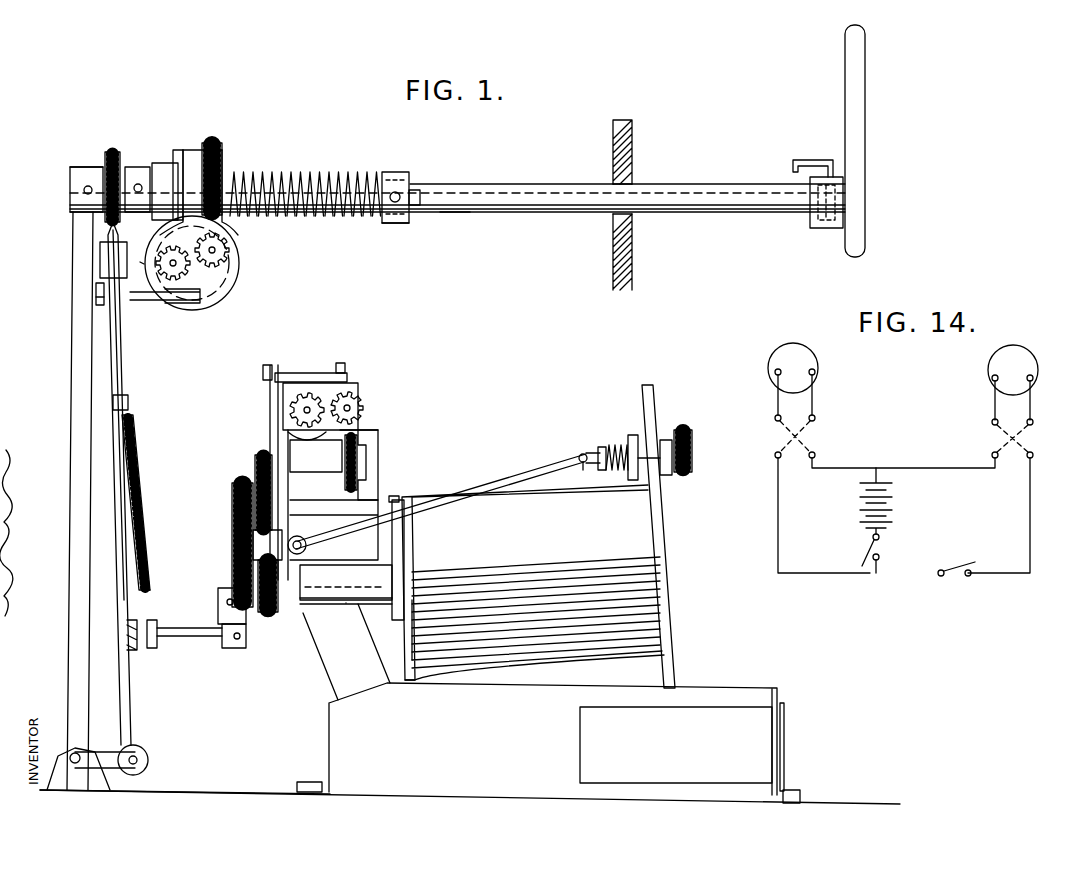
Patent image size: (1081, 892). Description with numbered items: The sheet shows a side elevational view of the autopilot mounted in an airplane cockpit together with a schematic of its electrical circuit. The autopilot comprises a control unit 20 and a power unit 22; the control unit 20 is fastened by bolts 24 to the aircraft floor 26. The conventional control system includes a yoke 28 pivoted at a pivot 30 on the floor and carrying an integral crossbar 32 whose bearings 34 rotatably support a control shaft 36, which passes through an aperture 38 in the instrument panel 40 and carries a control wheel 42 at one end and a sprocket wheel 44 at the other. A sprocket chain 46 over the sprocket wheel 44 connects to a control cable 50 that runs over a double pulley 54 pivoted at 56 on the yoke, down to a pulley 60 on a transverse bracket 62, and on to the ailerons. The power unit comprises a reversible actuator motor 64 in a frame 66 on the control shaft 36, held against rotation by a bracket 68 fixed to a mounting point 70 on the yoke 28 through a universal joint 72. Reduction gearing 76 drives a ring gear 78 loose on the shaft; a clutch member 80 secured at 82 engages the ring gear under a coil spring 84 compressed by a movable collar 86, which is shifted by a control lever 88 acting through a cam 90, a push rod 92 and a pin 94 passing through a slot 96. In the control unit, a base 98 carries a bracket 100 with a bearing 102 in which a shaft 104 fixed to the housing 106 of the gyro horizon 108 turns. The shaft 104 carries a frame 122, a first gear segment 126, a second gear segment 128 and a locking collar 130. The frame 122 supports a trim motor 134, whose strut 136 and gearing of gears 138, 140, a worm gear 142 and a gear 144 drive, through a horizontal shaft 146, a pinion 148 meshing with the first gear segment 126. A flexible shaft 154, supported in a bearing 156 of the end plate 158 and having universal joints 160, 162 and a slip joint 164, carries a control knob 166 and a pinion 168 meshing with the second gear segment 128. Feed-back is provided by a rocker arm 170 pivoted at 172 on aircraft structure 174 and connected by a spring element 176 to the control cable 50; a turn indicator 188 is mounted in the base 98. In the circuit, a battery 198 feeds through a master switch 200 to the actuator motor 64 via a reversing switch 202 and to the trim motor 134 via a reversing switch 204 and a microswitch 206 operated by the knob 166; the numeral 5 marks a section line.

In FIG. 1, the control unit 20 is at (452, 468).
In FIG. 1, the power unit 22 is at (300, 290).
In FIG. 1, the bolts 24 is at (306, 782).
In FIG. 1, the aircraft floor 26 is at (214, 795).
In FIG. 1, the yoke 28 is at (80, 411).
In FIG. 1, the pivot 30 is at (86, 748).
In FIG. 1, the crossbar 32 is at (78, 206).
In FIG. 1, the bearings 34 is at (86, 192).
In FIG. 1, the control shaft 36 is at (543, 184).
In FIG. 1, the apertures 38 is at (628, 183).
In FIG. 1, the instrument panel 40 is at (613, 242).
In FIG. 1, the wheel 42 is at (861, 125).
In FIG. 1, the sprocket wheel 44 is at (105, 165).
In FIG. 1, the sprocket chain 46 is at (115, 152).
In FIG. 1, the control cable 50 is at (120, 378).
In FIG. 1, the double pulley 54 is at (100, 250).
In FIG. 1, the pulley pivot 56 is at (96, 290).
In FIG. 1, the pulley 60 is at (150, 757).
In FIG. 1, the transverse bracket 62 is at (108, 760).
In FIG. 1, the reversible electric motor 64 is at (225, 302).
In FIG. 14, the reversible electric motor 64 is at (789, 345).
In FIG. 1, the frame 66 is at (190, 150).
In FIG. 1, the bracket 68 is at (146, 302).
In FIG. 1, the mounting point 70 is at (100, 298).
In FIG. 1, the universal joint 72 is at (166, 340).
In FIG. 1, the reduction gearing 76 is at (232, 258).
In FIG. 1, the ring gear 78 is at (222, 150).
In FIG. 1, the clutch member 80 is at (165, 163).
In FIG. 1, the clutch securing point 82 is at (139, 185).
In FIG. 1, the coil spring 84 is at (283, 172).
In FIG. 1, the movable collar 86 is at (393, 175).
In FIG. 1, the control lever 88 is at (806, 160).
In FIG. 1, the cam 90 is at (812, 216).
In FIG. 1, the push rod 92 is at (472, 212).
In FIG. 1, the pin 94 is at (392, 226).
In FIG. 1, the slot 96 is at (420, 192).
In FIG. 1, the base 98 is at (735, 690).
In FIG. 1, the bracket 100 is at (355, 686).
In FIG. 1, the bearing 102 is at (414, 620).
In FIG. 1, the shaft 104 is at (410, 575).
In FIG. 1, the housing 106 is at (418, 682).
In FIG. 1, the gyro horizon 108 is at (655, 593).
In FIG. 1, the frame 122 is at (378, 470).
In FIG. 1, the first gear segment 126 is at (232, 497).
In FIG. 1, the second gear segment 128 is at (248, 486).
In FIG. 1, the locking collar 130 is at (218, 597).
In FIG. 1, the trim motor 134 is at (283, 410).
In FIG. 14, the trim motor 134 is at (1000, 360).
In FIG. 1, the strut 136 is at (305, 376).
In FIG. 1, the gear 138 is at (322, 395).
In FIG. 1, the gear 140 is at (352, 412).
In FIG. 1, the worm gear 142 is at (358, 440).
In FIG. 1, the gear 144 is at (378, 492).
In FIG. 1, the horizontal shaft 146 is at (315, 452).
In FIG. 1, the pinion gear 148 is at (262, 437).
In FIG. 1, the shaft 154 is at (484, 490).
In FIG. 1, the bearing 156 is at (632, 450).
In FIG. 1, the end plate 158 is at (656, 402).
In FIG. 1, the universal joint 160 is at (306, 545).
In FIG. 1, the universal joint 162 is at (578, 464).
In FIG. 1, the spring-pressed slip joint 164 is at (604, 456).
In FIG. 1, the manual control knob 166 is at (683, 472).
In FIG. 1, the pinion 168 is at (253, 546).
In FIG. 1, the rocker arm 170 is at (160, 640).
In FIG. 1, the pivot 172 is at (150, 600).
In FIG. 1, the aircraft structure 174 is at (130, 625).
In FIG. 1, the spring element 176 is at (136, 478).
In FIG. 1, the turn indicator 188 is at (755, 735).
In FIG. 14, the battery 198 is at (892, 512).
In FIG. 14, the master switch 200 is at (862, 552).
In FIG. 14, the reversing switch 202 is at (808, 438).
In FIG. 14, the reversing switch 204 is at (1000, 436).
In FIG. 14, the microswitch 206 is at (953, 577).
In FIG. 1, the section line 5 is at (143, 656).